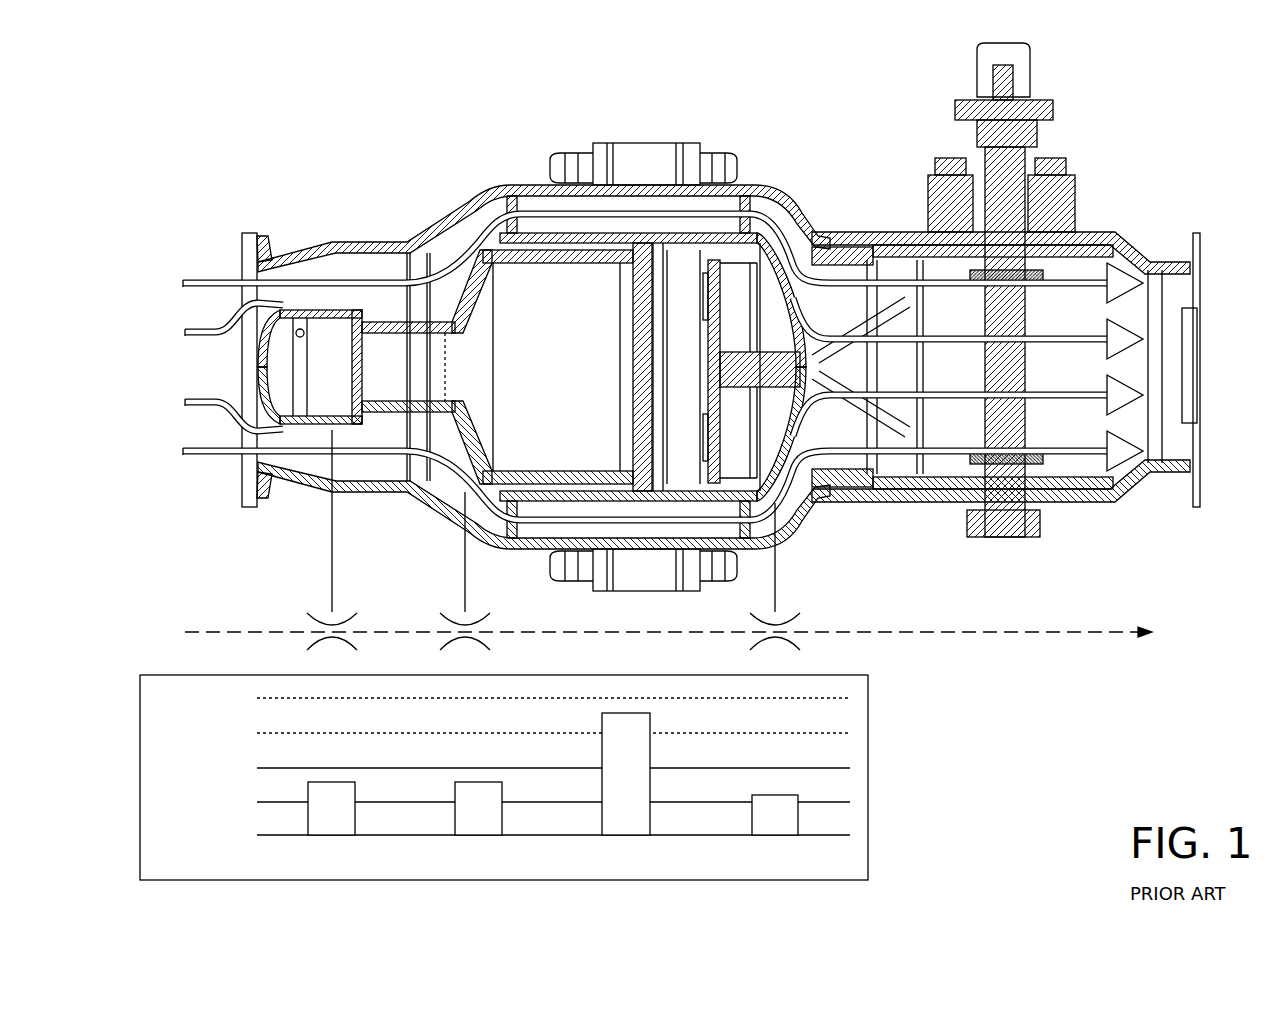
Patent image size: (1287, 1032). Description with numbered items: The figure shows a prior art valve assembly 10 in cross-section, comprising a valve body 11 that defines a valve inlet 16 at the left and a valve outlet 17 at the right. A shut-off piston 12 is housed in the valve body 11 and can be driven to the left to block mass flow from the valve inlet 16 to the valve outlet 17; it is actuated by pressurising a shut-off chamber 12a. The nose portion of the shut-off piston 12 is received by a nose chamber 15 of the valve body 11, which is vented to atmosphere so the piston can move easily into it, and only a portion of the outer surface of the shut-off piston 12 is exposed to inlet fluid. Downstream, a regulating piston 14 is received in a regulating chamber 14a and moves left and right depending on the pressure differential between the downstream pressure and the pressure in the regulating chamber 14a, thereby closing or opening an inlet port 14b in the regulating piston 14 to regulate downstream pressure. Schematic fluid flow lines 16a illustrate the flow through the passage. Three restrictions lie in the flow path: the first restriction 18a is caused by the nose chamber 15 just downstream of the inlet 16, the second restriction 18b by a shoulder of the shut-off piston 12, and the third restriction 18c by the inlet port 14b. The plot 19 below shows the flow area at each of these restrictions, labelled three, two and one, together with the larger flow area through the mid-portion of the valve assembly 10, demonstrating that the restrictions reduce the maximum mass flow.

The valve assembly 10 is at (285, 143).
The valve body 11 is at (813, 523).
The shut-off piston 12 is at (440, 237).
The shut-off chamber 12a is at (520, 303).
The regulating piston 14 is at (777, 250).
The regulating chamber 14a is at (683, 277).
The inlet port 14b is at (772, 230).
The nose chamber 15 is at (327, 347).
The valve inlet 16 is at (247, 367).
The fluid flow lines 16a is at (208, 277).
The valve outlet 17 is at (1200, 290).
The first restriction 18a is at (307, 613).
The second restriction 18b is at (460, 620).
The third restriction 18c is at (800, 645).
The plot 19 is at (853, 752).